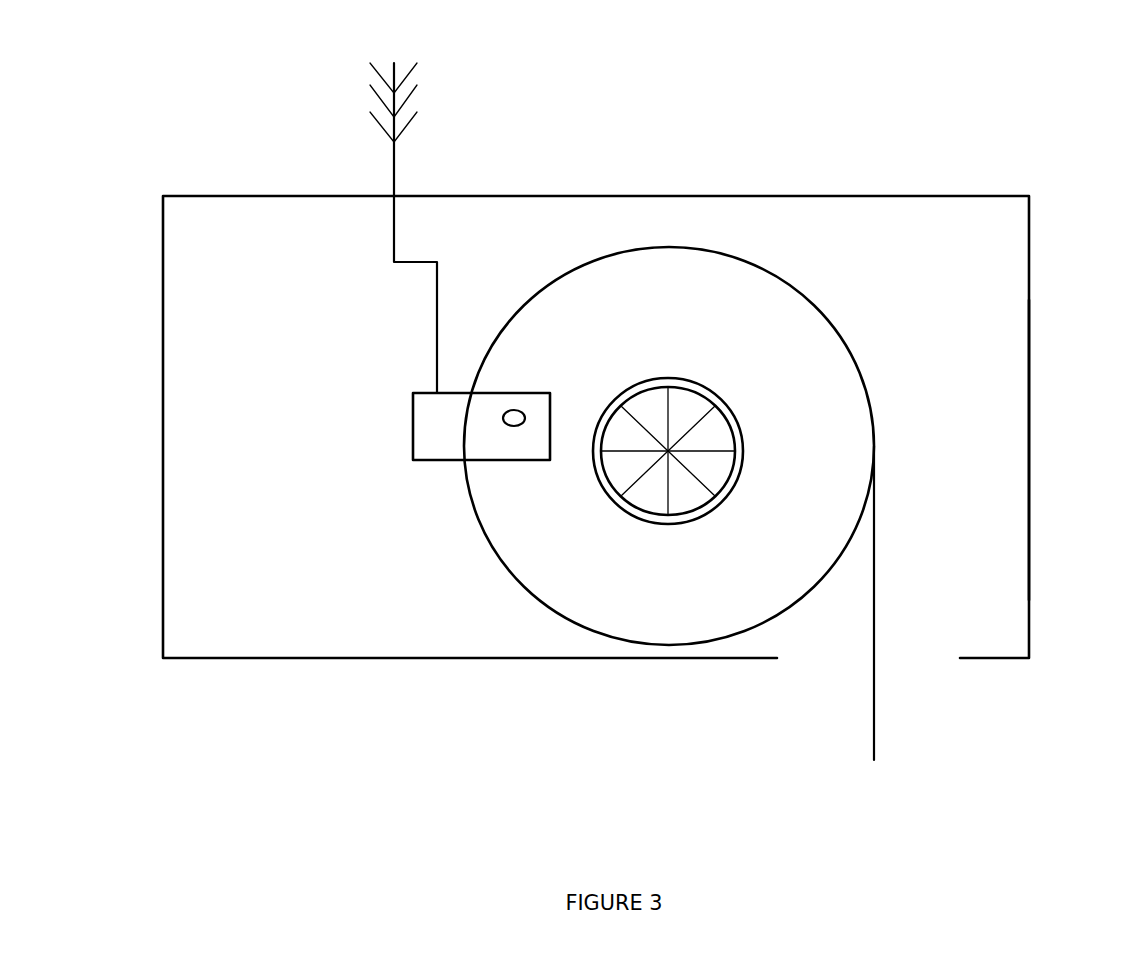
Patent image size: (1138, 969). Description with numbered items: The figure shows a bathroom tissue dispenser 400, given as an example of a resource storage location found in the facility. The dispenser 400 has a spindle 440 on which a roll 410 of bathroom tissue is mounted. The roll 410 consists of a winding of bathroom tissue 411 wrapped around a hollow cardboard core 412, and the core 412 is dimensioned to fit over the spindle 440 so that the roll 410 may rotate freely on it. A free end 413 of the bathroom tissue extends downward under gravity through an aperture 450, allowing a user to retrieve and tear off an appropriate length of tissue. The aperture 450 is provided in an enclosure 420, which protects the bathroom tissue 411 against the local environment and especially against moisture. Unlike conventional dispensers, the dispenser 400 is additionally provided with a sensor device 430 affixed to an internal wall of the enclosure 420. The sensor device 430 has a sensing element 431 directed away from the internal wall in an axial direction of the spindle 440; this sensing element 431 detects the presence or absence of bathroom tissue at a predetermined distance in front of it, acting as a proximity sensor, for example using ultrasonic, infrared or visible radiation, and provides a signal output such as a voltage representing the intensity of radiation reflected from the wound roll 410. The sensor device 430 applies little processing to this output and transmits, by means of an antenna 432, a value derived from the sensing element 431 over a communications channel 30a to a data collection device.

The communications channel 30a is at (245, 102).
The bathroom tissue dispenser 400 is at (1032, 281).
The roll 410 is at (563, 273).
The bathroom tissue 411 is at (675, 293).
The hollow cardboard core 412 is at (737, 418).
The free end 413 is at (880, 741).
The enclosure 420 is at (1031, 458).
The sensor device 430 is at (413, 460).
The sensing element 431 is at (514, 427).
The antenna 432 is at (418, 118).
The spindle 440 is at (675, 378).
The aperture 450 is at (938, 652).